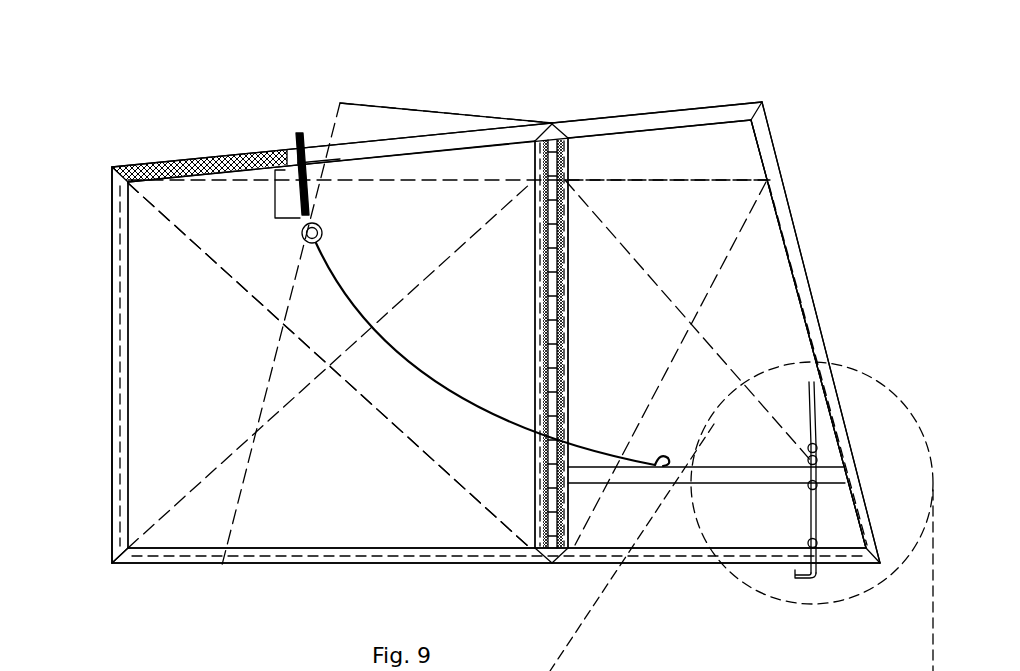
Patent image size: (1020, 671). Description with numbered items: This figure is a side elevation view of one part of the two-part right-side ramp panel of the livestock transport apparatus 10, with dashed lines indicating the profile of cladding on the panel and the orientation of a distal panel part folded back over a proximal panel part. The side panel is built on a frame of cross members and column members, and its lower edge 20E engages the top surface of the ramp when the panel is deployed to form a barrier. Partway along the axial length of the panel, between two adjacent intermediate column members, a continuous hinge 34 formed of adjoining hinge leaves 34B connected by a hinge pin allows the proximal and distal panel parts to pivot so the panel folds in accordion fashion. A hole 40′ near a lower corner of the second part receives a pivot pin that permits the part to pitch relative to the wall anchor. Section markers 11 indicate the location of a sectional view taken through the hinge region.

The apparatus 10 is at (82, 69).
The lower edge 20E is at (681, 563).
The hinge 34 is at (557, 400).
The hinge leaves 34B is at (568, 270).
The hole 40′ is at (114, 565).
The section line 11 is at (613, 318).